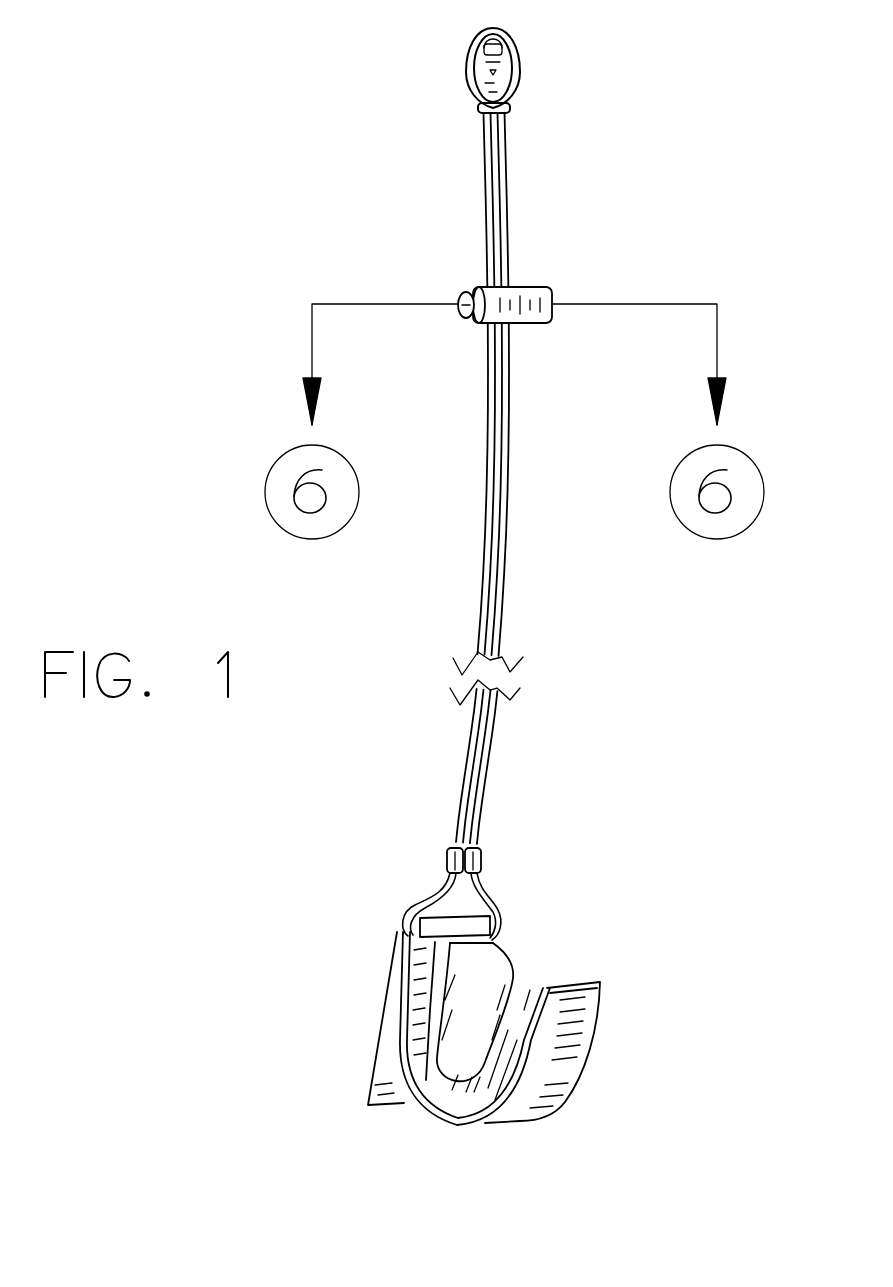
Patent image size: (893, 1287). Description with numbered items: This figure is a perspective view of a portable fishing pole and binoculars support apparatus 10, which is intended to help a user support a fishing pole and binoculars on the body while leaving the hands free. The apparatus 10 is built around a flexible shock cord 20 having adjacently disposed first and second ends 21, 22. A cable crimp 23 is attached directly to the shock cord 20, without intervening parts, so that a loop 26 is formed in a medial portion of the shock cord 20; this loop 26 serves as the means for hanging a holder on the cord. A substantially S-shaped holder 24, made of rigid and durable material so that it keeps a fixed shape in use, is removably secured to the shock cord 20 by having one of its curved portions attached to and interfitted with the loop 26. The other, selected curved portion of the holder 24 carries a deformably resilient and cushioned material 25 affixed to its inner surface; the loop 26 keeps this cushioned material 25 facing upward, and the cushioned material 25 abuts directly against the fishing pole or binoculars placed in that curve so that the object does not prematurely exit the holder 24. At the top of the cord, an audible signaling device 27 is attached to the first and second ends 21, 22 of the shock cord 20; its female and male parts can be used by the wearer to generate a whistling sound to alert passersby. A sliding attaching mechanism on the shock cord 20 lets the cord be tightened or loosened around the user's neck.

The portable fishing pole and binoculars support apparatus 10 is at (137, 200).
The flexible shock cord 20 is at (502, 488).
The first end 21 is at (485, 133).
The second end 22 is at (508, 143).
The cable crimp 23 is at (480, 863).
The S-shaped holder 24 is at (568, 1056).
The cushioned material 25 is at (530, 1000).
The loop 26 is at (420, 902).
The audible signaling device 27 is at (505, 72).